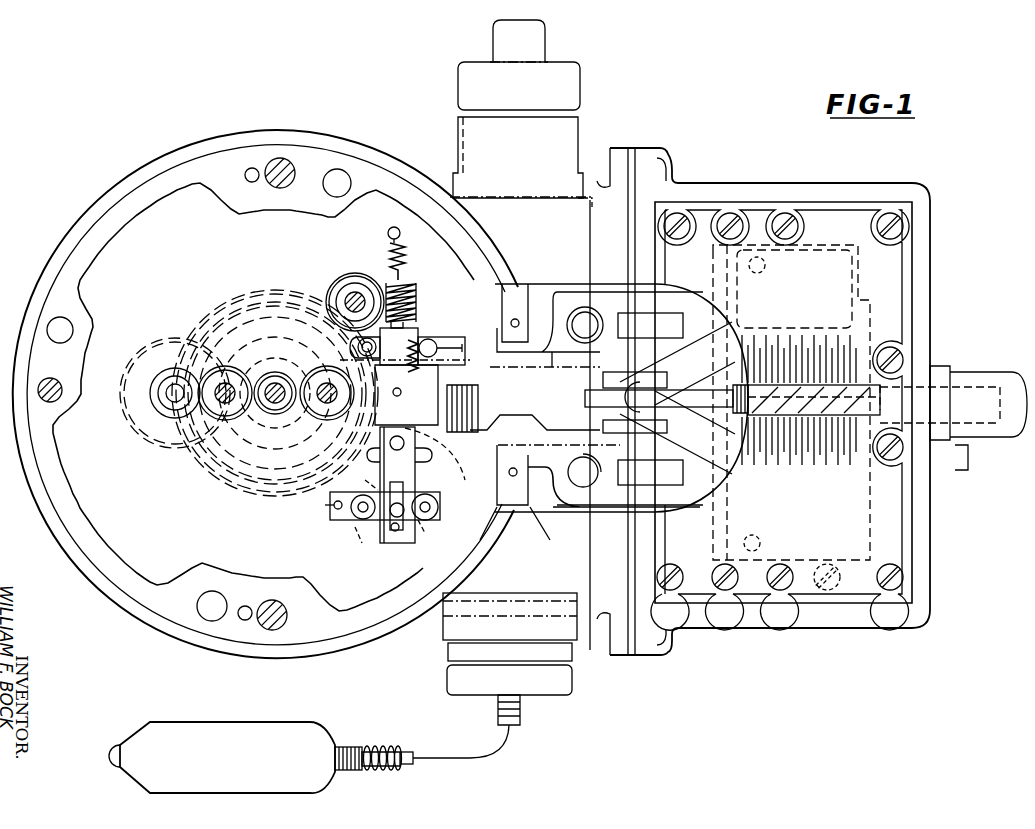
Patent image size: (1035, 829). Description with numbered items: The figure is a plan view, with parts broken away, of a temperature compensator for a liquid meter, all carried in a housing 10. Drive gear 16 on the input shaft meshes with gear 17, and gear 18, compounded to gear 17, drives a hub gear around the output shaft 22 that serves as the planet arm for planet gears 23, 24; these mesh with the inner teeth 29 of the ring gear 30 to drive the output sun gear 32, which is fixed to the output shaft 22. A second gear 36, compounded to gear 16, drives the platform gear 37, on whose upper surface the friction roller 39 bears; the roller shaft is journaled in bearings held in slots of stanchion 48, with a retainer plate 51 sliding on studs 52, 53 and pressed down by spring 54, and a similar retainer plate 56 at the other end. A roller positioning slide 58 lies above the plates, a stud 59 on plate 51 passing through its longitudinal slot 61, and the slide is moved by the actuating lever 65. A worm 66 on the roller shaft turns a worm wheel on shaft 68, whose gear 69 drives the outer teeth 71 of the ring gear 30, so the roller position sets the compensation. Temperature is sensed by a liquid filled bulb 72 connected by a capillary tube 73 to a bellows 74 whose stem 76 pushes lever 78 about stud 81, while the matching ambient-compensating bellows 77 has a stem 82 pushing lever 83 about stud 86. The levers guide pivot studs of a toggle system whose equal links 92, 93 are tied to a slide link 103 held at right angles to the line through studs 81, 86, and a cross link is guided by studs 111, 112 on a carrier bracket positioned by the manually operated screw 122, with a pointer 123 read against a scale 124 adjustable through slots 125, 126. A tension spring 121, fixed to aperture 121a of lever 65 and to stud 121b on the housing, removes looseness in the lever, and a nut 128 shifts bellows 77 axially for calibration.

The housing 10 is at (125, 619).
The drive gear 16 is at (297, 420).
The gear 17 is at (150, 447).
The gear 18 is at (166, 368).
The output shaft 22 is at (280, 405).
The planet gear 23 is at (240, 370).
The planet gear 24 is at (320, 375).
The inner teeth 29 is at (241, 482).
The ring gear 30 is at (213, 475).
The output sun gear 32 is at (280, 370).
The second gear 36 is at (262, 427).
The platform gear 37 is at (443, 470).
The friction roller 39 is at (430, 456).
The stanchion 48 is at (360, 530).
The retainer plate 51 is at (333, 520).
The stud 52 is at (357, 519).
The stud 53 is at (438, 510).
The spring 54 is at (325, 505).
The retainer plate 56 is at (460, 334).
The roller positioning slide 58 is at (400, 545).
The stud 59 is at (398, 484).
The longitudinal slot 61 is at (392, 532).
The actuating lever 65 is at (500, 378).
The worm 66 is at (420, 298).
The shaft 68 is at (345, 300).
The gear 69 is at (343, 276).
The outer teeth 71 is at (268, 495).
The liquid filled bulb 72 is at (248, 730).
The capillary tube 73 is at (394, 750).
The liquid filled bellows 74 is at (447, 648).
The stem 76 is at (500, 487).
The bellows 77 is at (580, 140).
The lever 78 is at (660, 505).
The stud 81 is at (583, 480).
The stem 82 is at (502, 308).
The lever 83 is at (680, 300).
The stud 86 is at (572, 328).
The toggle link 92 is at (668, 450).
The toggle link 93 is at (680, 352).
The slide link 103 is at (604, 424).
The stud 111 is at (765, 268).
The stud 112 is at (762, 540).
The tension spring 121 is at (392, 252).
The aperture 121a is at (430, 406).
The stud 121b is at (390, 231).
The manually operated screw 122 is at (583, 400).
The pointer 123 is at (828, 430).
The scale 124 is at (817, 370).
The slot 125 is at (822, 250).
The slot 126 is at (830, 564).
The nut 128 is at (545, 44).